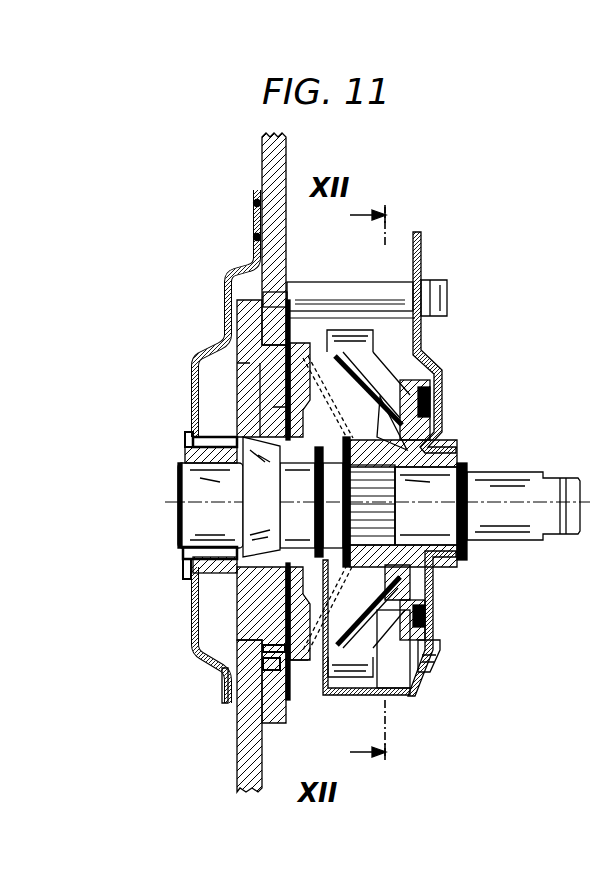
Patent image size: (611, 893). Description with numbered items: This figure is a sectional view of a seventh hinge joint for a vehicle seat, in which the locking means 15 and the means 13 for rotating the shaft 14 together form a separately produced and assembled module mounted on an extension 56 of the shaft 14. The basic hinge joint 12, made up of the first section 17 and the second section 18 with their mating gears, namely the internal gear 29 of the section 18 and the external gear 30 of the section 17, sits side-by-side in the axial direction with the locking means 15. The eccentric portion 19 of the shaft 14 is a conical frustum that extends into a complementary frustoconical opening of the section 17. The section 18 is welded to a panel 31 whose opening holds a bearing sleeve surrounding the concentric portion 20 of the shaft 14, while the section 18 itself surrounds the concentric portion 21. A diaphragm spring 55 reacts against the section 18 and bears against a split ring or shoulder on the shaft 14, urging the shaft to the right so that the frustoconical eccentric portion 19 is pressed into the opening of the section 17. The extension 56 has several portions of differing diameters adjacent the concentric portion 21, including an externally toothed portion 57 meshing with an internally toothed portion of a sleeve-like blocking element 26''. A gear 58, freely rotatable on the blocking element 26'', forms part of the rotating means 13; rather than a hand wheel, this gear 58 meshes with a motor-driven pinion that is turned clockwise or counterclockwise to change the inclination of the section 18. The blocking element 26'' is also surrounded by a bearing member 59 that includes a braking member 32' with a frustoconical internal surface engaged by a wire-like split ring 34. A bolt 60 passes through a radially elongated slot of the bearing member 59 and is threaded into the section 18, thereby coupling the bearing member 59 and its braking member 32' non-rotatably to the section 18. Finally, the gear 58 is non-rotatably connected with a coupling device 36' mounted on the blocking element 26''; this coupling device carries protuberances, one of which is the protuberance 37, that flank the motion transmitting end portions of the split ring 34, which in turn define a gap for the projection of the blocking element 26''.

The hinge joint 12 is at (205, 340).
The means for rotating the shaft 13 is at (326, 690).
The shaft 14 is at (521, 470).
The locking means 15 is at (437, 347).
The first section 17 is at (244, 733).
The second section 18 is at (272, 176).
The eccentric portion 19 is at (268, 432).
The concentric portion 20 is at (200, 485).
The concentric portion 21 is at (290, 410).
The blocking element 26'' is at (413, 478).
The internal gear 29 is at (232, 668).
The external gear 30 is at (275, 650).
The cover rim 31 is at (228, 270).
The braking member 32' is at (463, 658).
The split ring 34 is at (432, 630).
The coupling device 36' is at (447, 584).
The protuberance 37 is at (440, 393).
The diaphragm spring 55 is at (300, 390).
The extension 56 is at (432, 490).
The externally toothed portion 57 is at (462, 556).
The gear 58 is at (352, 652).
The bearing member 59 is at (438, 612).
The bolt 60 is at (338, 295).